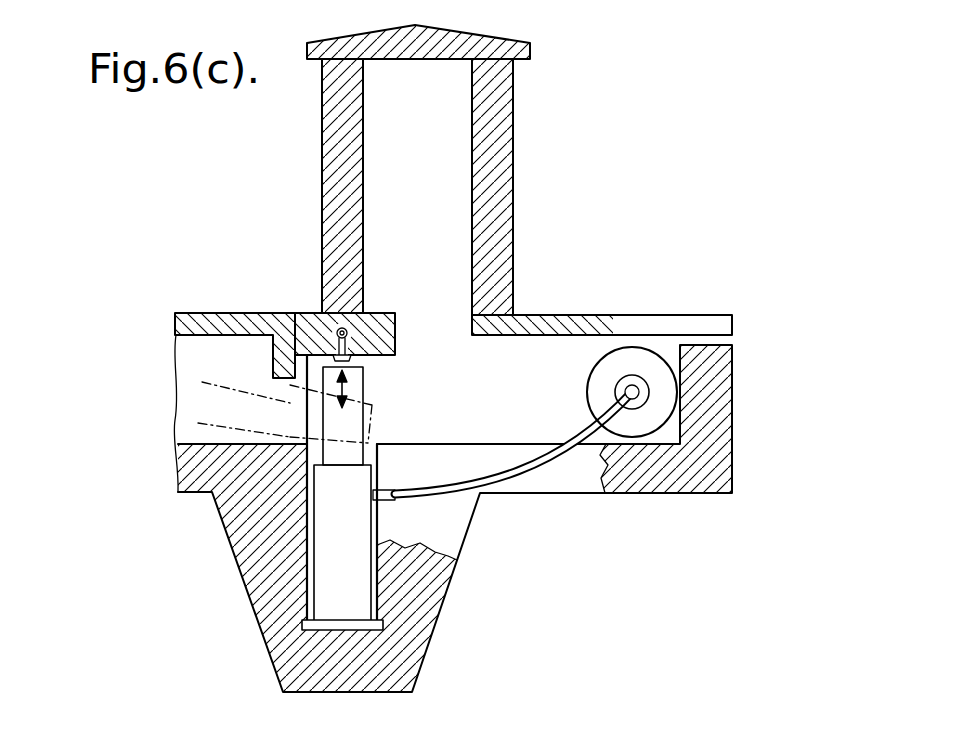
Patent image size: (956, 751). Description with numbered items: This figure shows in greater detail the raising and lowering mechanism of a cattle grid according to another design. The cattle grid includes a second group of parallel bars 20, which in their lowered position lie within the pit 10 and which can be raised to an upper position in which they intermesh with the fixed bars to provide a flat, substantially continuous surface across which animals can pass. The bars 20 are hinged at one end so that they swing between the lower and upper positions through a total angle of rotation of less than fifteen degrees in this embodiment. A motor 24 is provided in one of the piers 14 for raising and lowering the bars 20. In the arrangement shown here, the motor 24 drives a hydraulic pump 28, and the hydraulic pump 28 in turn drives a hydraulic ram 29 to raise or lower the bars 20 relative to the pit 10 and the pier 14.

The pit 10 is at (636, 482).
The pier 14 is at (322, 113).
The second group of parallel bars 20 is at (215, 322).
The motor 24 is at (538, 383).
The hydraulic pump 28 is at (628, 382).
The hydraulic ram 29 is at (333, 583).